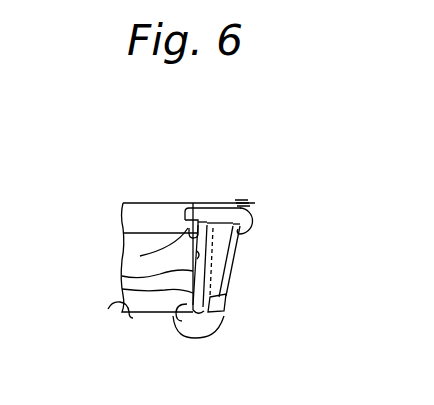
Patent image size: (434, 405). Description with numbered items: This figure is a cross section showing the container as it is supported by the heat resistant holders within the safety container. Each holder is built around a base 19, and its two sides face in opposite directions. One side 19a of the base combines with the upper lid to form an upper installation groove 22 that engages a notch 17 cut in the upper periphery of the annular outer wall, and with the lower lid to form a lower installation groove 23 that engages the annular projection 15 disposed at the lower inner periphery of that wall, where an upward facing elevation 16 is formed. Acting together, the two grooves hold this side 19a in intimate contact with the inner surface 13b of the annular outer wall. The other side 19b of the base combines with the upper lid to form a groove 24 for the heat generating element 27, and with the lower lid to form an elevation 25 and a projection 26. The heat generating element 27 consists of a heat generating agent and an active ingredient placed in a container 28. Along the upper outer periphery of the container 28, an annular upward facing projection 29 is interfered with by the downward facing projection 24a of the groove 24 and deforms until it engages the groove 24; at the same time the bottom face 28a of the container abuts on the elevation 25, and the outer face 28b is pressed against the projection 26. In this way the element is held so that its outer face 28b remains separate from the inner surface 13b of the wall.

The heat generating element 27 is at (118, 196).
The container 28 is at (145, 243).
The outer face 28b is at (193, 263).
The annular upward facing projection 29 is at (124, 248).
The side of the base 19b is at (122, 275).
The projection 26 is at (122, 292).
The bottom face 28a is at (126, 314).
The notch 17 is at (245, 204).
The downward facing projection 24a is at (188, 226).
The groove 24 is at (201, 227).
The base 19 is at (232, 258).
The upper installation groove 22 is at (247, 235).
The inner surface 13b is at (235, 270).
The side of the base 19a is at (230, 286).
The upward facing elevation 16 is at (226, 298).
The elevation 25 is at (175, 330).
The lower installation groove 23 is at (226, 313).
The annular projection 15 is at (210, 339).